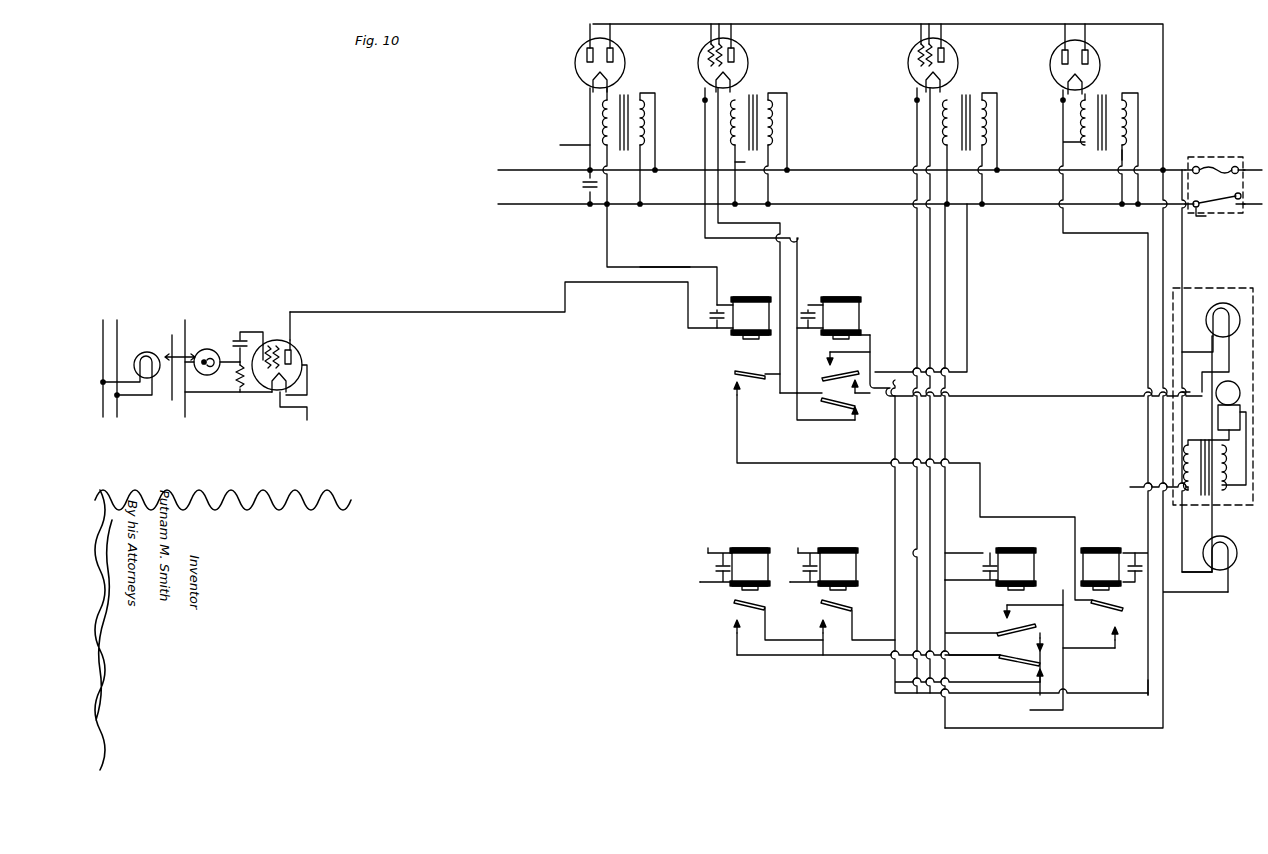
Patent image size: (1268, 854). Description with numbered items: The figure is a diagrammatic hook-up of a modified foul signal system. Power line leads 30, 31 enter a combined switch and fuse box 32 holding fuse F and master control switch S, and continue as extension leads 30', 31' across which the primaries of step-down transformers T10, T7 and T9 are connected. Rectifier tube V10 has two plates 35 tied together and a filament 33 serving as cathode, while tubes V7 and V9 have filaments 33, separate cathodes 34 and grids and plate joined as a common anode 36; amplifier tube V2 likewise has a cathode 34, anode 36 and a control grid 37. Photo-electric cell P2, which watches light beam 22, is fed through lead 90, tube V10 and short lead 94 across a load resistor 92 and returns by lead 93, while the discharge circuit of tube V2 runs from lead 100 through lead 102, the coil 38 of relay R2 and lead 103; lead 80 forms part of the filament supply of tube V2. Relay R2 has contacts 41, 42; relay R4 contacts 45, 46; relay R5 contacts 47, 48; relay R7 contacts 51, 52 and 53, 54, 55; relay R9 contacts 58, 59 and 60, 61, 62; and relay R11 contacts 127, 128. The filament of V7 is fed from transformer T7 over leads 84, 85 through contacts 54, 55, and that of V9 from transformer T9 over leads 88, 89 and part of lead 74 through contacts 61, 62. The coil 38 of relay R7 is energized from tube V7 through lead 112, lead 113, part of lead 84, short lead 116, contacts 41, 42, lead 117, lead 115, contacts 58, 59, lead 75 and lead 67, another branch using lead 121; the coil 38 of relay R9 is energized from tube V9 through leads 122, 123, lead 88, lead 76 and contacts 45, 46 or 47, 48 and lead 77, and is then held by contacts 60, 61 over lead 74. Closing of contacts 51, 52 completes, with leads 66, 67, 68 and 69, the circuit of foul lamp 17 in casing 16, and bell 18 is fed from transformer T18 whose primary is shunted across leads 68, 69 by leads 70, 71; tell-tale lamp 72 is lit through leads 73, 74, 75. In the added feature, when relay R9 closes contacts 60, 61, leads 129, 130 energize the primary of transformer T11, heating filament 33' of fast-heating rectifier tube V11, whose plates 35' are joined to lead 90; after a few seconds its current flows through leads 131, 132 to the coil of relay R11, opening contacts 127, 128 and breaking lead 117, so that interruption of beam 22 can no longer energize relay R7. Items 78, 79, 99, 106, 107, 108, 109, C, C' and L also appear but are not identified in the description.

The signal housing 16 is at (1246, 287).
The incandescent lamp 17 is at (1214, 308).
The bell 18 is at (1236, 386).
The light beam 22 is at (190, 348).
The power line lead 30 is at (1252, 154).
The power line lead 31 is at (1251, 221).
The power line extension lead 30' is at (841, 159).
The power line extension lead 31' is at (841, 203).
The combined switch and fuse box 32 is at (1197, 218).
The filament 33 is at (769, 75).
The filament 33' is at (1052, 83).
The cathode 34 is at (707, 63).
The plate 35 is at (578, 49).
The plate 35' is at (1097, 51).
The common anode 36 is at (735, 48).
The control grid 37 is at (288, 340).
The electro-magnetic coil 38 is at (856, 548).
The relay contact 41 is at (751, 370).
The relay contact 42 is at (733, 386).
The relay contact 45 is at (733, 602).
The relay contact 46 is at (733, 623).
The relay contact 47 is at (848, 604).
The relay contact 48 is at (820, 620).
The relay contact 51 is at (823, 381).
The relay contact 52 is at (828, 361).
The relay contact 53 is at (860, 396).
The relay contact 54 is at (831, 403).
The relay contact 55 is at (858, 418).
The relay contact 58 is at (996, 631).
The relay contact 59 is at (1003, 612).
The relay contact 60 is at (1035, 648).
The relay contact 61 is at (1000, 667).
The relay contact 62 is at (1036, 675).
The lead 66 is at (865, 336).
The lead 67 is at (968, 251).
The lead 68 is at (1183, 261).
The lead 69 is at (873, 360).
The lead 70 is at (1184, 404).
The lead 71 is at (1129, 489).
The tell-tale lamp 72 is at (1228, 543).
The lead 73 is at (1183, 527).
The lead 74 is at (960, 658).
The lead 75 is at (895, 432).
The lead 76 is at (790, 662).
The lead 77 is at (802, 643).
The lead 78 is at (104, 318).
The lead 79 is at (118, 334).
The lead 80 is at (309, 411).
The lead 84 is at (778, 410).
The lead 85 is at (717, 127).
The lead 88 is at (947, 187).
The lead 89 is at (928, 139).
The lead 90 is at (673, 26).
The load resistor 92 is at (238, 395).
The lead 93 is at (171, 402).
The short lead 94 is at (191, 372).
The condenser 99 is at (238, 336).
The lead 100 is at (605, 155).
The lead 102 is at (668, 260).
The lead 103 is at (406, 313).
The conductor 106 is at (700, 584).
The conductor 107 is at (710, 550).
The conductor 108 is at (790, 584).
The conductor 109 is at (798, 553).
The lead 112 is at (704, 103).
The lead 113 is at (802, 330).
The lead 115 is at (1022, 612).
The short lead 116 is at (772, 380).
The lead 117 is at (735, 429).
The lead 121 is at (1062, 589).
The lead 122 is at (916, 114).
The lead 123 is at (950, 582).
The relay contact 127 is at (1117, 625).
The relay contact 128 is at (1110, 603).
The lead 129 is at (1121, 159).
The lead 130 is at (1136, 187).
The lead 131 is at (1062, 184).
The lead 132 is at (1145, 680).
The condenser C is at (923, 438).
The condenser C' is at (577, 147).
The fuse F is at (1222, 160).
The master control switch S is at (1212, 218).
The light source L is at (156, 354).
The photo-electric cell P2 is at (221, 348).
The vacuum tube V2 is at (281, 359).
The vacuum tube V7 is at (621, 219).
The vacuum tube V9 is at (933, 47).
The rectifier tube V10 is at (769, 47).
The rectifier tube V11 is at (1077, 48).
The transformer T7 is at (760, 144).
The transformer T9 is at (971, 144).
The transformer T10 is at (630, 139).
The transformer T11 is at (1111, 141).
The bell transformer T18 is at (1205, 459).
The relay R2 is at (922, 440).
The relay R4 is at (750, 569).
The relay R5 is at (838, 569).
The relay R7 is at (841, 318).
The relay R9 is at (1016, 569).
The relay R11 is at (1101, 569).